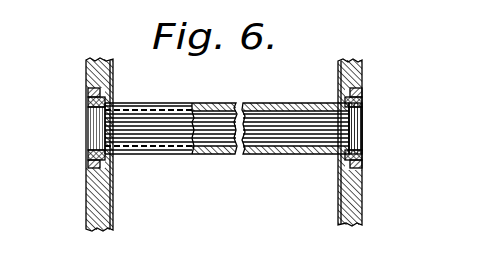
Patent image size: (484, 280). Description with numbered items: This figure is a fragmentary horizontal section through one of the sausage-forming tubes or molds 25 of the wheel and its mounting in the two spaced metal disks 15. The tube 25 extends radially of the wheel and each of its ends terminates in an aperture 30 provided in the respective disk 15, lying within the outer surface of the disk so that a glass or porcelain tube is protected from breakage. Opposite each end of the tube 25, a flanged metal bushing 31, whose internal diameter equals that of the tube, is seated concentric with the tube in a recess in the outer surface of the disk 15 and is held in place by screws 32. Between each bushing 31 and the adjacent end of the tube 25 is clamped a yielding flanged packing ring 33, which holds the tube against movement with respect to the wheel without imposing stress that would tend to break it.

The metal disk 15 is at (90, 185).
The tube or mold 25 is at (283, 103).
The aperture 30 is at (108, 162).
The flanged metal bushing 31 is at (88, 101).
The screw 32 is at (88, 91).
The yielding flanged packing ring 33 is at (88, 128).